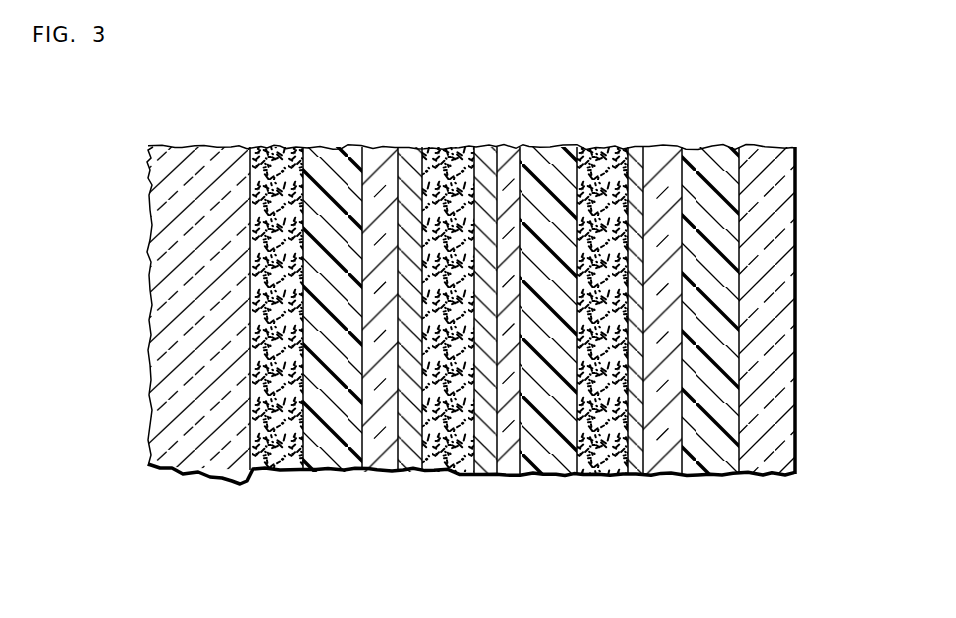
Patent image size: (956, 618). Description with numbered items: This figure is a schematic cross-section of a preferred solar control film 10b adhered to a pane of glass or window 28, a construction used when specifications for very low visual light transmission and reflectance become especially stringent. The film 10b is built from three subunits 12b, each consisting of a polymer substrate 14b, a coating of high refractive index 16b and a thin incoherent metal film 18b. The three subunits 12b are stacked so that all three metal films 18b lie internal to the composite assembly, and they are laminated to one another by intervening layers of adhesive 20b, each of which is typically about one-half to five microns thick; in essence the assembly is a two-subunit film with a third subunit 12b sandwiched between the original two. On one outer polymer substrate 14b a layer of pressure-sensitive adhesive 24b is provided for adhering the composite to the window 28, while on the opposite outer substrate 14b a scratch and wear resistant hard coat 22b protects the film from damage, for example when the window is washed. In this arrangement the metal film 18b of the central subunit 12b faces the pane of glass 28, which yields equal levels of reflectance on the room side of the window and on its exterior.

The solar control film 10b is at (737, 92).
The subunit 12b is at (420, 135).
The polymer substrate 14b is at (333, 470).
The coating of high refractive index 16b is at (375, 470).
The thin incoherent metal film 18b is at (412, 472).
The adhesive 20b is at (440, 472).
The hard coat 22b is at (780, 420).
The pressure-sensitive adhesive 24b is at (273, 470).
The pane of glass 28 is at (148, 447).